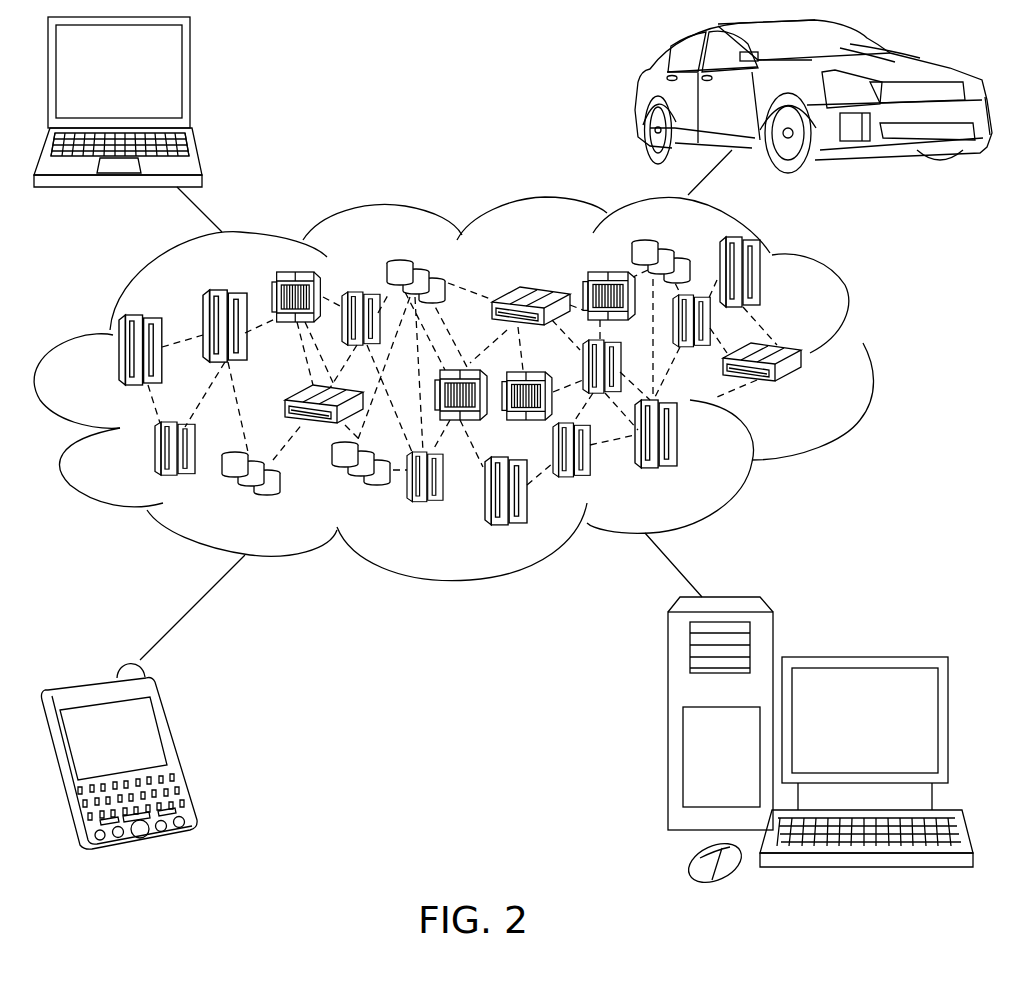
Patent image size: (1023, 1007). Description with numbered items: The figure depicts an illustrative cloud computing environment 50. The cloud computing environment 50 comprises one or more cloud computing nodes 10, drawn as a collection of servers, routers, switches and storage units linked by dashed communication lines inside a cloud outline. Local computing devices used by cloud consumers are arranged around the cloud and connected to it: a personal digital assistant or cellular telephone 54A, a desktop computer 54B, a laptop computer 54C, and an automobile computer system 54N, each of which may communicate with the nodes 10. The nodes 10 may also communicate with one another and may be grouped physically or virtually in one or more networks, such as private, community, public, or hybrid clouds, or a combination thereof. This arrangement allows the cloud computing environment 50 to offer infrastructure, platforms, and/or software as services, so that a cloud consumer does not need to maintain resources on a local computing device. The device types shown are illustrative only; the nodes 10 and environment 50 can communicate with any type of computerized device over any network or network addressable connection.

The cloud computing node 10 is at (804, 392).
The cloud computing environment 50 is at (860, 358).
The personal digital assistant or cellular telephone 54A is at (180, 750).
The desktop computer 54B is at (862, 655).
The laptop computer 54C is at (192, 80).
The automobile computer system 54N is at (636, 95).